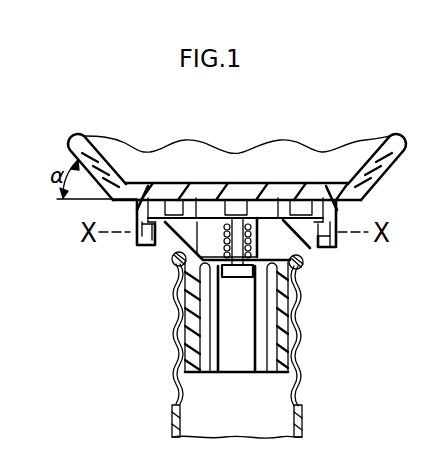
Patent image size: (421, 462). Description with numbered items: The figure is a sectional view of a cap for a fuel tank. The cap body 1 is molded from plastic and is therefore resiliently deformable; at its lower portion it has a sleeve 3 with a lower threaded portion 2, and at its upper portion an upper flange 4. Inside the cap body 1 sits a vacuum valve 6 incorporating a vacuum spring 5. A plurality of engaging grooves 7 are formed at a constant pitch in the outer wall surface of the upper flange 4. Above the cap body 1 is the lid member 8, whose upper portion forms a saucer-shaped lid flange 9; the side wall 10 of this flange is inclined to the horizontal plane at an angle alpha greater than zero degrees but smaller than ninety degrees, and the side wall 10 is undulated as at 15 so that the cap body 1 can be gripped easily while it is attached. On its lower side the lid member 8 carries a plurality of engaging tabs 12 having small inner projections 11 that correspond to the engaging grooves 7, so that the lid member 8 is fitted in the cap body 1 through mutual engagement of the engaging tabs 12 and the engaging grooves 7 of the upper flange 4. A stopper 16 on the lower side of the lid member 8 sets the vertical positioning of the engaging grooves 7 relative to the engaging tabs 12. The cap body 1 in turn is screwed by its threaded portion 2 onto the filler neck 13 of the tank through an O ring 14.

The cap body 1 is at (293, 241).
The threaded portion 2 is at (187, 379).
The sleeve 3 is at (300, 347).
The upper flange 4 is at (175, 238).
The vacuum spring 5 is at (258, 230).
The vacuum valve 6 is at (215, 342).
The engaging grooves 7 is at (327, 243).
The lid member 8 is at (155, 182).
The lid flange 9 is at (324, 198).
The side wall 10 is at (97, 163).
The inner projections 11 is at (153, 248).
The engaging tabs 12 is at (137, 207).
The filler neck 13 is at (268, 407).
The O ring 14 is at (238, 277).
The undulation 15 is at (218, 147).
The stopper 16 is at (173, 207).